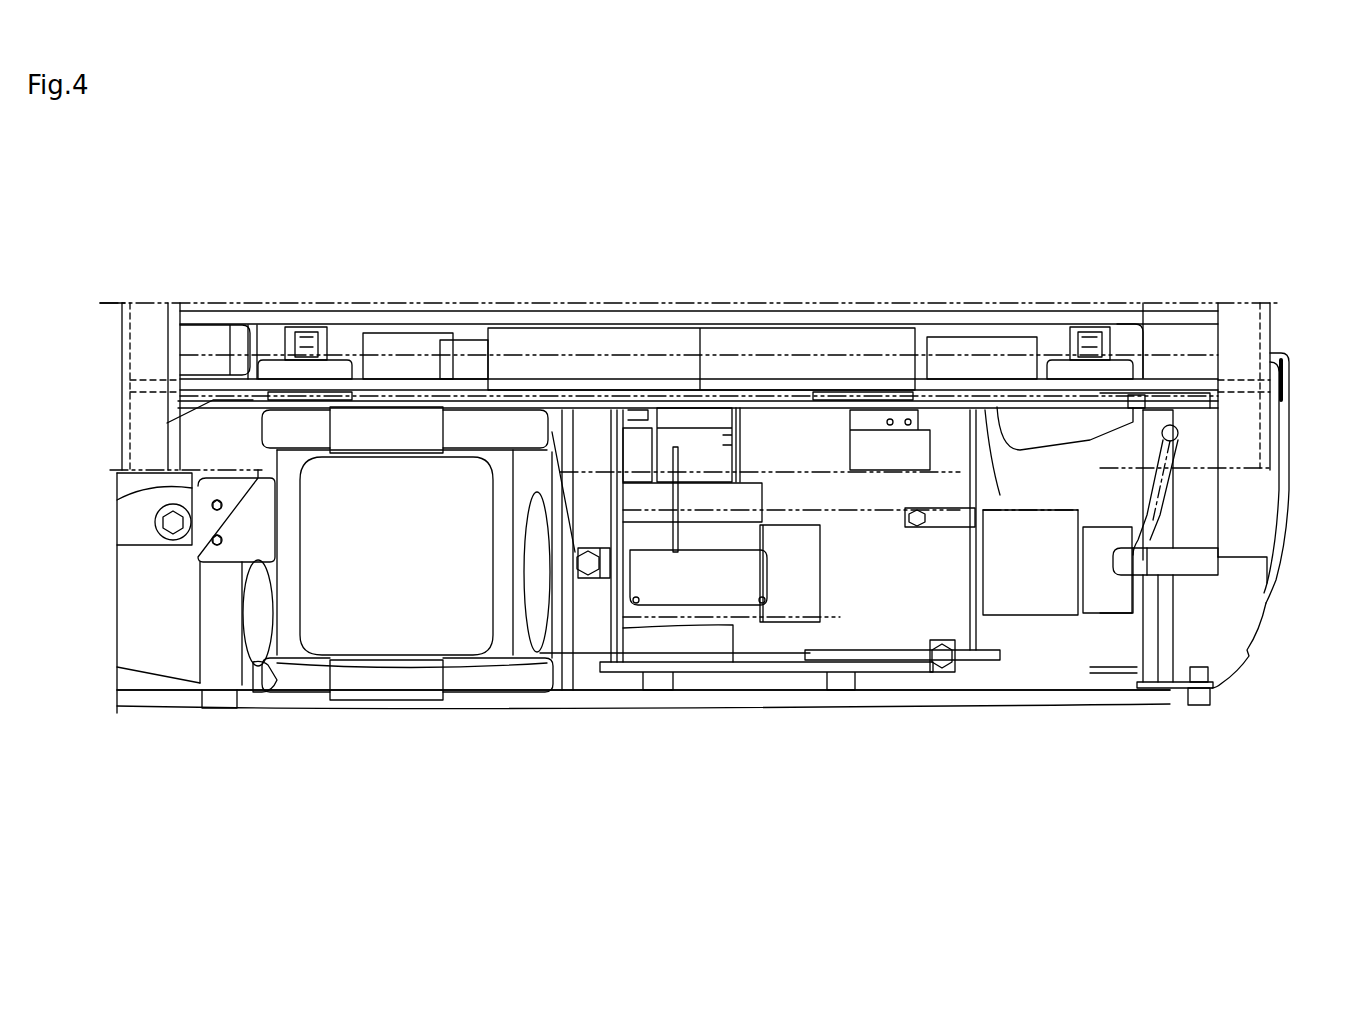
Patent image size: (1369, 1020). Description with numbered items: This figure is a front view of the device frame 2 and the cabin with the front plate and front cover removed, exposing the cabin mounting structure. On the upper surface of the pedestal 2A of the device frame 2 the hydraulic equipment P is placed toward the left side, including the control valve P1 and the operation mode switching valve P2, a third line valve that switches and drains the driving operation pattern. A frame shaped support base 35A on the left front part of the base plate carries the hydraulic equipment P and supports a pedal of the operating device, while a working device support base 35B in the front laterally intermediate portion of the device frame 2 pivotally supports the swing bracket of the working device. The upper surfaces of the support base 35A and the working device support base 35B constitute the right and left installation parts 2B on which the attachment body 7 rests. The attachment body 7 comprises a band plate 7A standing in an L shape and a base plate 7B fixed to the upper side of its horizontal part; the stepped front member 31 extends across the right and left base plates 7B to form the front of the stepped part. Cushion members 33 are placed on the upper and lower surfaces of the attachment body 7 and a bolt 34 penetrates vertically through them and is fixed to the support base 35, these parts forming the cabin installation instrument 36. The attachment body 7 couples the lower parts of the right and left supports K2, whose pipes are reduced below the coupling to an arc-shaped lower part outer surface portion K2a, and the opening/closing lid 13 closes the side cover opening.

The device frame 2 is at (776, 732).
The pedestal 2A is at (636, 705).
The installation parts 2B is at (325, 398).
The attachment body 7 is at (608, 300).
The band plate 7A is at (878, 395).
The base plate 7B is at (397, 388).
The opening/closing lid 13 is at (1273, 525).
The stepped front member 31 is at (757, 340).
The cushion members 33 is at (272, 360).
The bolt 34 is at (307, 328).
The support base 35 is at (1138, 400).
The frame shaped support base 35A is at (1010, 440).
The working device support base 35B is at (280, 420).
The cabin installation instrument 36 is at (685, 291).
The supports K2 is at (135, 340).
The lower part outer surface portion K2a is at (1250, 417).
The hydraulic equipment P is at (999, 719).
The control valve P1 is at (888, 618).
The operation mode switching valve P2 is at (1110, 615).